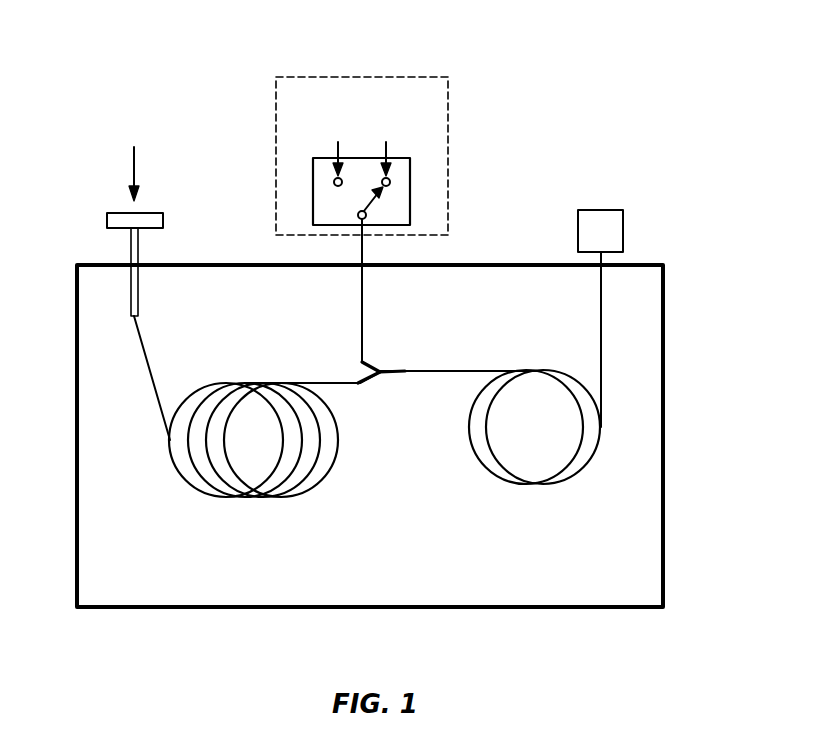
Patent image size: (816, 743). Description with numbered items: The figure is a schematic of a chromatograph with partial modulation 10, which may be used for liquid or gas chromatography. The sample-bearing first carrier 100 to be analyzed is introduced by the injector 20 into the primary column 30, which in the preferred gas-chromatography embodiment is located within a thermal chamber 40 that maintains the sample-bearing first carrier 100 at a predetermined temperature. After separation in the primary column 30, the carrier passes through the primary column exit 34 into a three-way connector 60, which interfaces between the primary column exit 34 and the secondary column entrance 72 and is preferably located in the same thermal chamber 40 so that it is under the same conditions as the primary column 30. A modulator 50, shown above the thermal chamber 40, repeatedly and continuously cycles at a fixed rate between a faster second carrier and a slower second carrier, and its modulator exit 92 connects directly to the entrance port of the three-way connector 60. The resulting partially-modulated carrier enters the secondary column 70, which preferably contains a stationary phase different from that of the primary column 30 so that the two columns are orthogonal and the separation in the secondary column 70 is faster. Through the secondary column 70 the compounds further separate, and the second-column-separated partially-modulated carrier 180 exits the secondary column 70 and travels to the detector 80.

The chromatograph with partial modulation 10 is at (612, 48).
The injector 20 is at (107, 220).
The primary column 30 is at (183, 478).
The primary column exit 34 is at (352, 383).
The thermal chamber 40 is at (667, 293).
The modulator 50 is at (408, 76).
The three-way connector 60 is at (383, 375).
The secondary column 70 is at (577, 472).
The secondary column entrance 72 is at (422, 371).
The detector 80 is at (608, 210).
The modulator exit 92 is at (365, 330).
The sample-bearing first carrier 100 is at (132, 165).
The second-column-separated partially-modulated carrier 180 is at (599, 327).